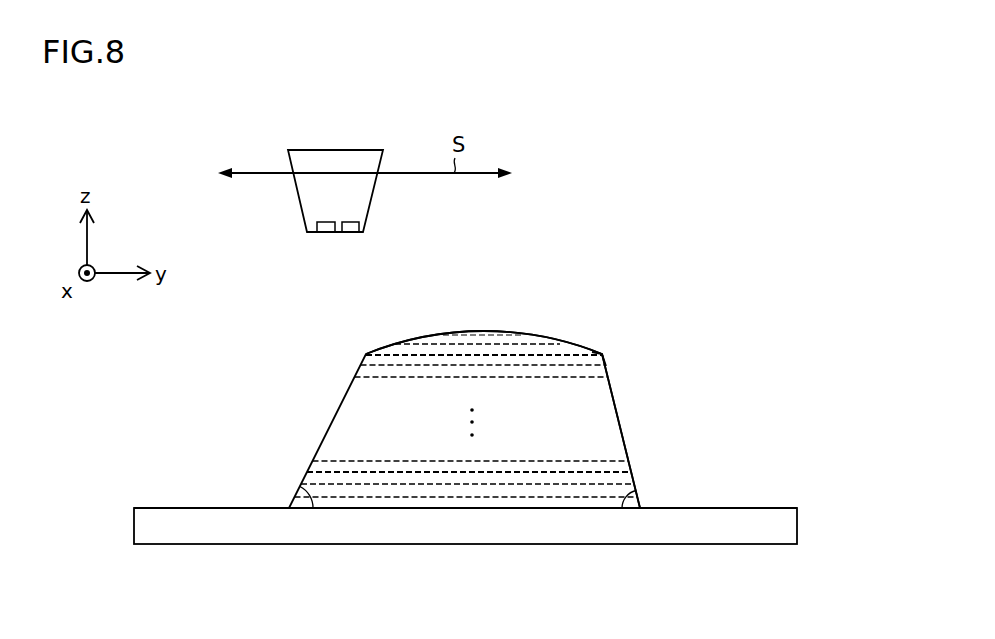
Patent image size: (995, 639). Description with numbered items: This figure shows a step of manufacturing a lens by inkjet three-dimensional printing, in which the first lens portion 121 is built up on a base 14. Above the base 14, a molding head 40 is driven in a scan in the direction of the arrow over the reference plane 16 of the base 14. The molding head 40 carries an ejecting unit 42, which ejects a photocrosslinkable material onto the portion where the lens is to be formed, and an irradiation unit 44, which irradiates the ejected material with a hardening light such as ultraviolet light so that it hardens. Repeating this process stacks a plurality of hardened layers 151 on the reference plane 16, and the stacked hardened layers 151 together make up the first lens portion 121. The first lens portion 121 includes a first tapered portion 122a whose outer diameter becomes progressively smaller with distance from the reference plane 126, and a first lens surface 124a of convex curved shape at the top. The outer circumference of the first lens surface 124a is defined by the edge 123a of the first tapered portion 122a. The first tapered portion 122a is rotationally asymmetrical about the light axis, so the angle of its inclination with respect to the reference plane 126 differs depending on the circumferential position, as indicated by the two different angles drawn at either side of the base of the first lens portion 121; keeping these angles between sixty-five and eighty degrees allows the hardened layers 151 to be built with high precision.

The molding head 40 is at (337, 160).
The ejecting unit 42 is at (350, 222).
The irradiation unit 44 is at (325, 222).
The first lens portion 121 is at (495, 380).
The first lens surface 124a is at (445, 332).
The first tapered portion 122a is at (622, 430).
The edge 123a is at (614, 341).
The hardened layers 151 is at (372, 356).
The reference plane 126 is at (407, 510).
The base 14 is at (797, 526).
The reference plane 16 is at (775, 507).